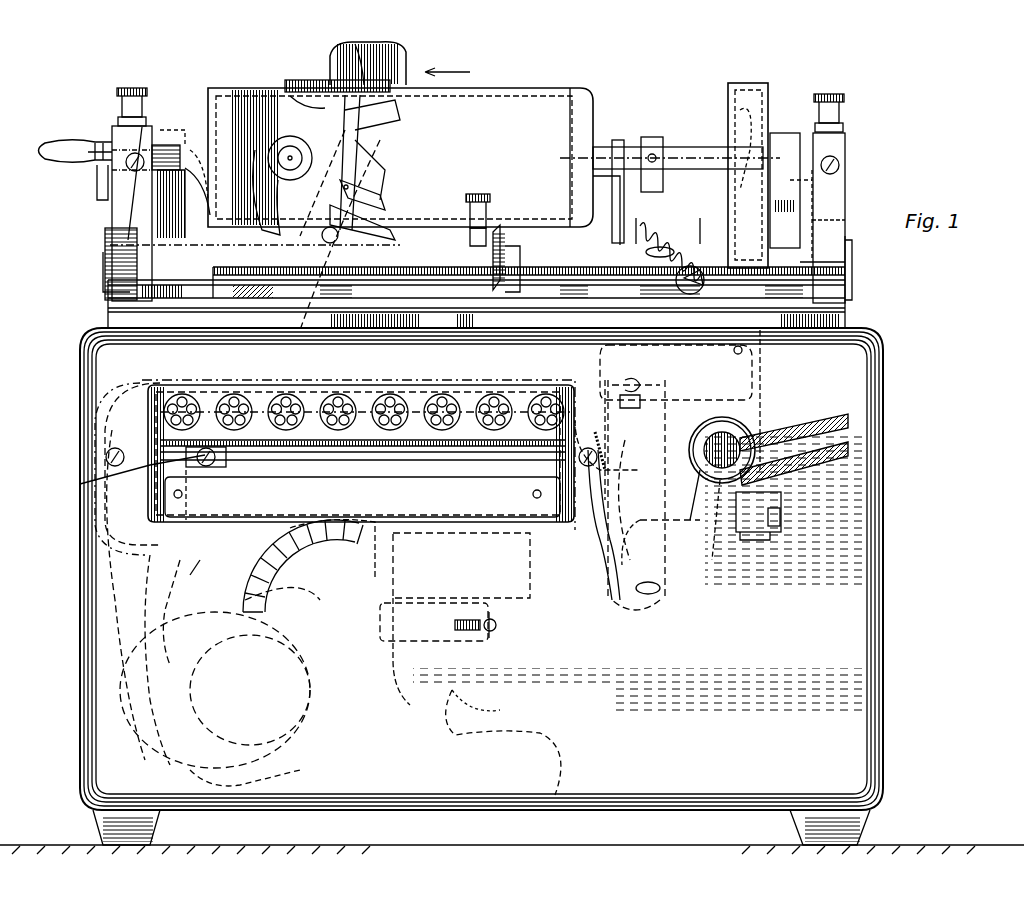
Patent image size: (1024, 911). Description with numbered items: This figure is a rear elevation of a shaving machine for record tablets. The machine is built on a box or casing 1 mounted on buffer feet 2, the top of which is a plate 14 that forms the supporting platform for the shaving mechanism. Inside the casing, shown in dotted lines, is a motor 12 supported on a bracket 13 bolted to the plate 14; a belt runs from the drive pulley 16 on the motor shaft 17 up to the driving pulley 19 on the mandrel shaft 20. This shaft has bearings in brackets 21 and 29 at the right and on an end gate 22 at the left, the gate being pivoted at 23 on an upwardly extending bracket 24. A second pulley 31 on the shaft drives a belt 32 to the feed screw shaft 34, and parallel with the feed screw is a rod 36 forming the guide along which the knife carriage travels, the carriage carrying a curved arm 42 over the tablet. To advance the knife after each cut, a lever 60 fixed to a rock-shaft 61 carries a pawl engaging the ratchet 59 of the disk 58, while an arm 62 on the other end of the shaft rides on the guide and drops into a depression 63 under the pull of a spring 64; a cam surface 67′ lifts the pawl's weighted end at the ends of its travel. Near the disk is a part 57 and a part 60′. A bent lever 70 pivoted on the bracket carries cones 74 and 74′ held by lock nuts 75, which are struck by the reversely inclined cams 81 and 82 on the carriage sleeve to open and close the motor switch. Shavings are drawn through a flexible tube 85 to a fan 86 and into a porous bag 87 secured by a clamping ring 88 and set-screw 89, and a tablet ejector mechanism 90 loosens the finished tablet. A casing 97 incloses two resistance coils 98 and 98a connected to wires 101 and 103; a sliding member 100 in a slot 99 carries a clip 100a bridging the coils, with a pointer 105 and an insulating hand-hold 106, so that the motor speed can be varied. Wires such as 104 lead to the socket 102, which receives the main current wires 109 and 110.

The box or casing 1 is at (82, 540).
The buffer feet or supports 2 is at (150, 826).
The motor 12 is at (690, 420).
The bracket 13 is at (605, 380).
The plate 14 is at (470, 348).
The drive pulley 16 is at (780, 500).
The motor shaft 17 is at (780, 525).
The driving pulley 19 is at (768, 88).
The mandrel shaft 20 is at (672, 138).
The bracket 21 is at (845, 140).
The end gate 22 is at (150, 112).
The pivot 23 is at (105, 240).
The upwardly extending bracket 24 is at (115, 290).
The bracket 29 is at (640, 155).
The second pulley 31 is at (795, 140).
The belt 32 is at (800, 190).
The feed screw shaft 34 is at (380, 312).
The rod or guide or way 36 is at (535, 236).
The curved arm 42 is at (390, 150).
The arm 57 is at (336, 48).
The disk 58 is at (310, 95).
The ratchet 59 is at (300, 105).
The lever 60 is at (312, 125).
The roller pivot 60′ is at (326, 195).
The rock-shaft 61 is at (334, 233).
The arm or lever 62 is at (385, 230).
The depression 63 is at (660, 252).
The spring 64 is at (378, 195).
The cam surface 67′ is at (395, 118).
The bent lever 70 is at (712, 360).
The conical cam surface 74 is at (820, 270).
The conical cam surface 74′ is at (668, 355).
The lock nuts 75 is at (768, 375).
The annular cam surface 81 is at (512, 240).
The annular cam surface 82 is at (495, 228).
The flexible tube 85 is at (170, 600).
The fan 86 is at (400, 575).
The bag 87 is at (470, 672).
The clamping ring 88 is at (470, 605).
The set-screw 89 is at (498, 626).
The tablet ejector mechanism 90 is at (685, 290).
The box or casing 97 is at (150, 398).
The resistance coil 98 is at (232, 525).
The resistance coil 98a is at (371, 383).
The slot 99 is at (310, 418).
The sliding member 100 is at (117, 480).
The connecting clip 100a is at (207, 576).
The wire 101 is at (600, 565).
The socket 102 is at (722, 478).
The wire 103 is at (720, 478).
The wire 104 is at (705, 440).
The pointer 105 is at (150, 430).
The hand-hold 106 is at (200, 470).
The main current wire 109 is at (862, 445).
The main current wire 110 is at (860, 420).